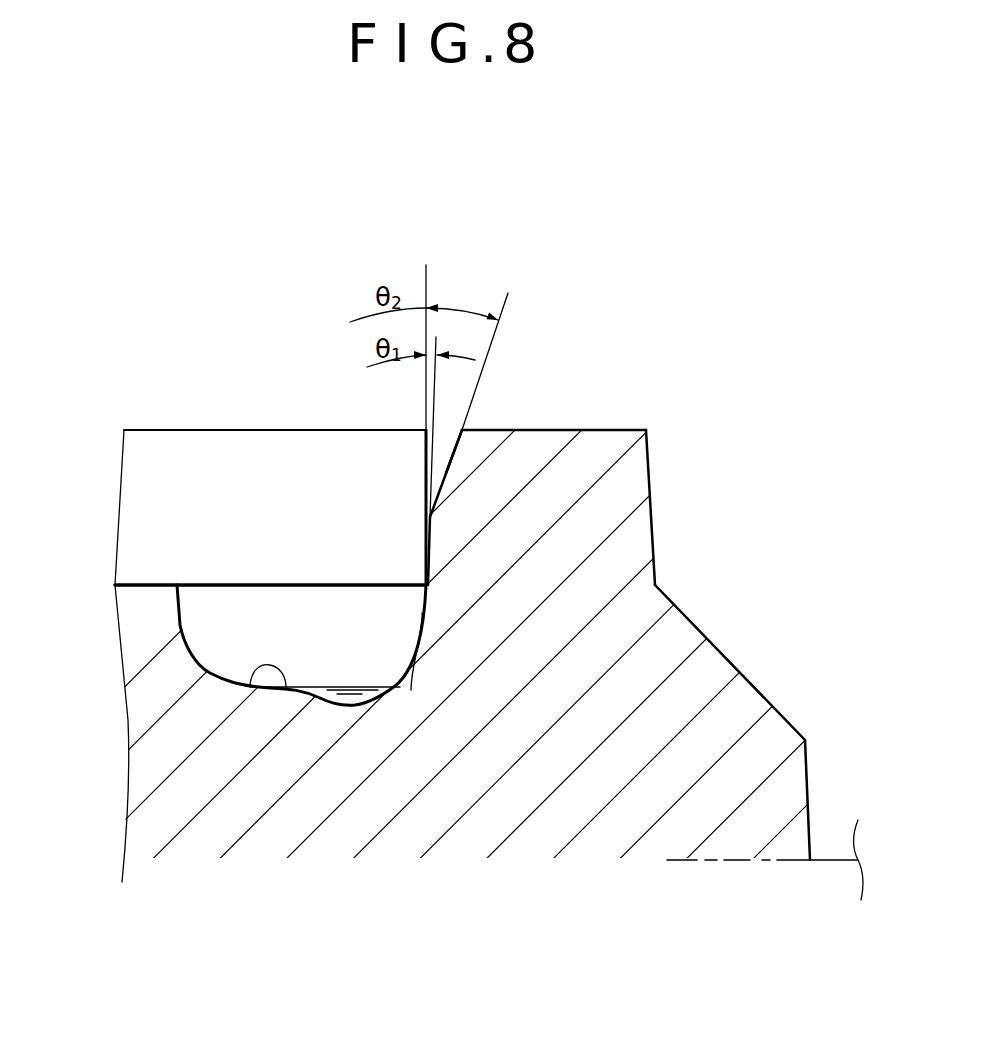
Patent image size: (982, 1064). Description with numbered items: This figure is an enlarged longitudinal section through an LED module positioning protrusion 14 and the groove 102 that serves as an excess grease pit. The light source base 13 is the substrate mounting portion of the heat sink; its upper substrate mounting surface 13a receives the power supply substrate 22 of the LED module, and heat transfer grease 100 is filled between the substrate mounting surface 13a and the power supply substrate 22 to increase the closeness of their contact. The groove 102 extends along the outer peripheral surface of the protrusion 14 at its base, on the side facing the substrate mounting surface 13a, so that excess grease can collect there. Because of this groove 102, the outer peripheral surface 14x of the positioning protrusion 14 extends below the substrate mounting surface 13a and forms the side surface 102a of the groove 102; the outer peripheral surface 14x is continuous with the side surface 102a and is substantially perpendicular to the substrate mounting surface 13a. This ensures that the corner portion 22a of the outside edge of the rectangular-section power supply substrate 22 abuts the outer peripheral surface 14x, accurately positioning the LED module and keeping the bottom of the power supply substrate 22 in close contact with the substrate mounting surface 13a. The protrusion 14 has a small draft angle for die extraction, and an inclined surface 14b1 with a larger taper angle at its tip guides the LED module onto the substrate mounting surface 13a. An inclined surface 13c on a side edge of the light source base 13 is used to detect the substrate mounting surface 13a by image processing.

The light source base 13 is at (707, 493).
The substrate mounting surface 13a is at (153, 583).
The inclined surface 13c is at (753, 685).
The LED positioning protrusion 14 is at (603, 430).
The outer peripheral surface 14x is at (425, 555).
The inclined surface 14b1 is at (455, 450).
The power supply substrate 22 is at (237, 418).
The corner portion 22a is at (426, 587).
The heat transfer grease 100 is at (136, 587).
The groove 102 is at (250, 685).
The side surface 102a is at (411, 690).